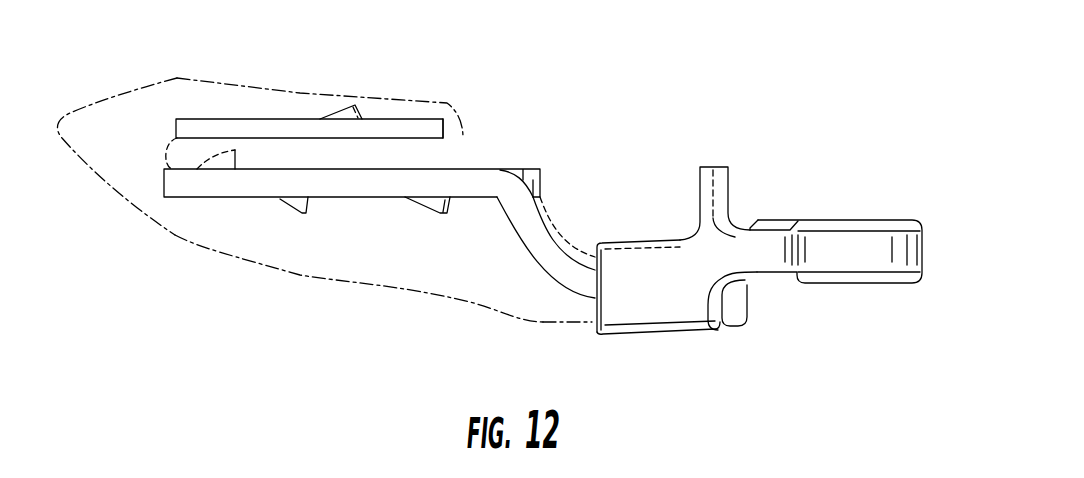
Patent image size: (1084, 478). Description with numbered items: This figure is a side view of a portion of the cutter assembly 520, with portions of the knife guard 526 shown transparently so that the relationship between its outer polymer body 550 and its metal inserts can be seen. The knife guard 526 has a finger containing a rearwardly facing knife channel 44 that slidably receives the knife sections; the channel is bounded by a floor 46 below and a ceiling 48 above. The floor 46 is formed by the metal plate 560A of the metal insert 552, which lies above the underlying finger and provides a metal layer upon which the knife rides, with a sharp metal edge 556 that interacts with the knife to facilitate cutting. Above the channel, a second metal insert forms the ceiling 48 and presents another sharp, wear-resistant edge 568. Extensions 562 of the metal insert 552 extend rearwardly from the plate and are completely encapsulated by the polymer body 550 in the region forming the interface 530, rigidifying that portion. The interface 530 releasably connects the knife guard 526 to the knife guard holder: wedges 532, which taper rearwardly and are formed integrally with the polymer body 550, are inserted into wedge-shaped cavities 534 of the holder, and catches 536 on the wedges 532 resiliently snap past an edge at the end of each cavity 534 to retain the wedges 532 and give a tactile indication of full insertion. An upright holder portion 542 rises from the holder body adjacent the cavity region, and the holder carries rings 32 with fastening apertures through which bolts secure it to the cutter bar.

The rings 32 is at (922, 220).
The knife channel 44 is at (337, 148).
The floor 46 is at (260, 167).
The ceiling 48 is at (260, 140).
The cutter assembly 520 is at (738, 104).
The knife guard 526 is at (183, 74).
The interface 530 is at (592, 350).
The wedges 532 is at (587, 322).
The wedge-shaped cavities 534 is at (645, 318).
The catches 536 is at (732, 307).
The upright stem 542 is at (736, 164).
The outer polymer body 550 is at (175, 237).
The metal insert 552 is at (508, 172).
The edge 556 is at (330, 170).
The metal plate 560A is at (365, 182).
The extensions 562 is at (520, 253).
The edge 568 is at (412, 138).